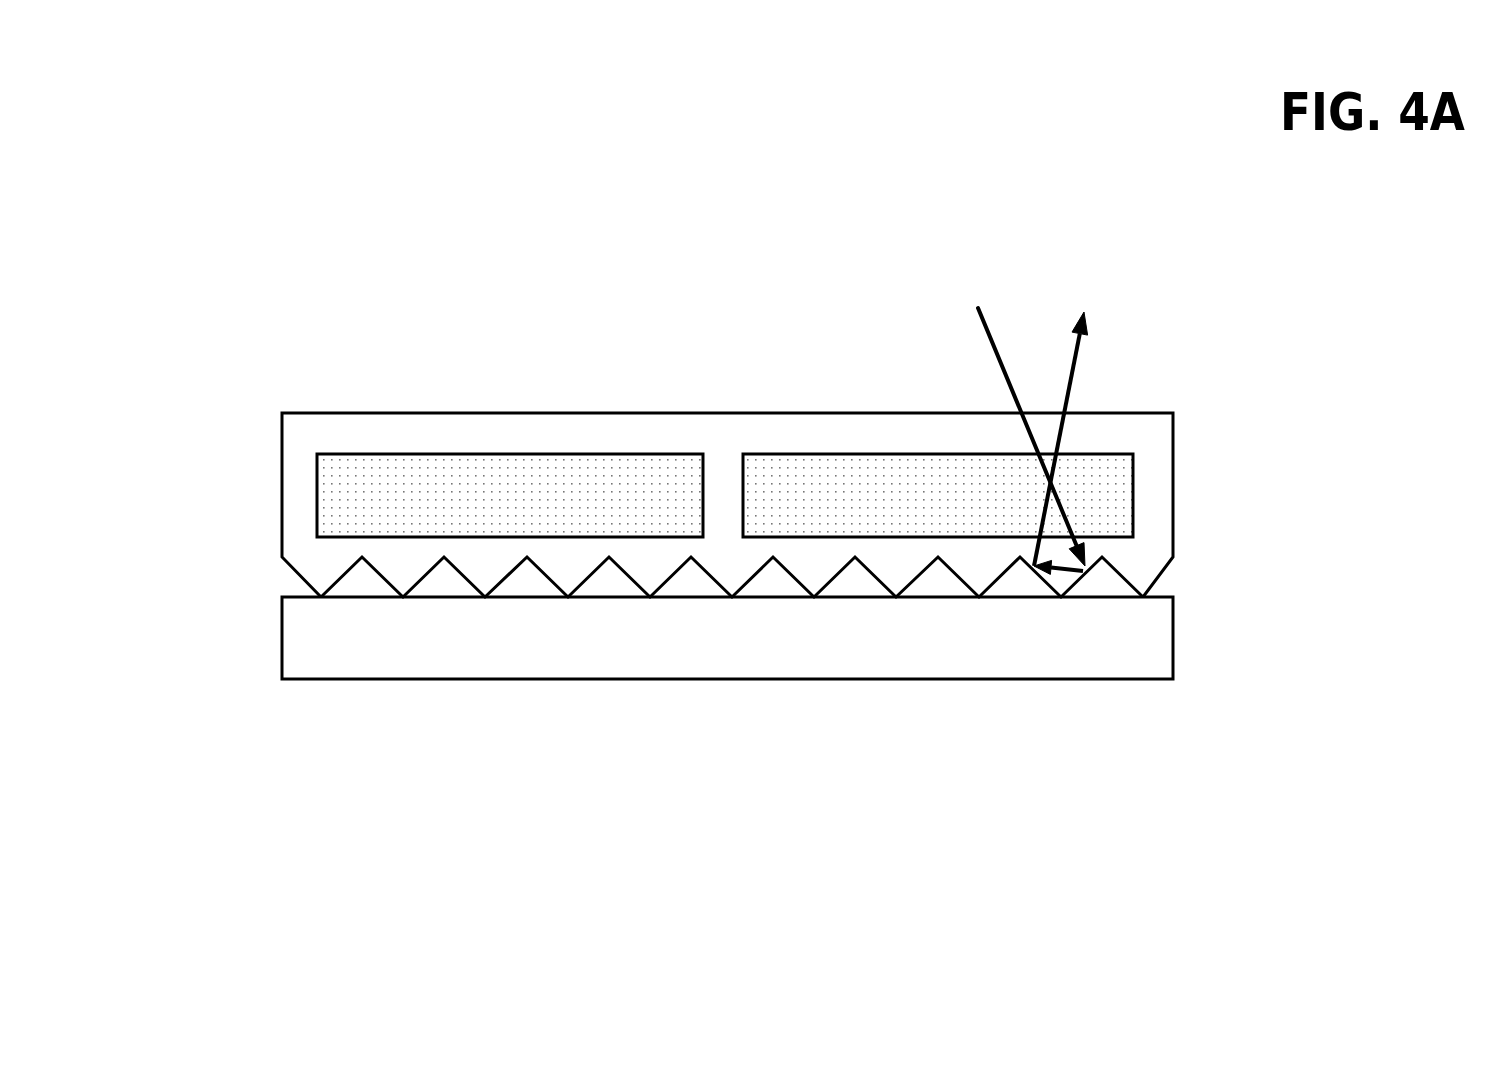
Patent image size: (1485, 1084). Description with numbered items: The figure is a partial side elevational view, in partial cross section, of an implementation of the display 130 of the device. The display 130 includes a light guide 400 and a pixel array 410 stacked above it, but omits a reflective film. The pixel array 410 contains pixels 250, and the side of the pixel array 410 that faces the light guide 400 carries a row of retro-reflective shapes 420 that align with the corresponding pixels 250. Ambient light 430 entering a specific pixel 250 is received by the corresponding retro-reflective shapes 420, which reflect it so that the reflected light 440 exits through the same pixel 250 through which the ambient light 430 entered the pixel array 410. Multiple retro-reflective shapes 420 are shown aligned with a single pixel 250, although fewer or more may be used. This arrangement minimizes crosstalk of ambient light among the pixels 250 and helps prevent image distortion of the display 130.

The display 130 is at (209, 105).
The pixel 250 is at (783, 475).
The light guide 400 is at (1173, 640).
The pixel array 410 is at (847, 458).
The retro-reflective shapes 420 is at (727, 565).
The ambient light 430 is at (998, 343).
The reflected light 440 is at (1073, 382).